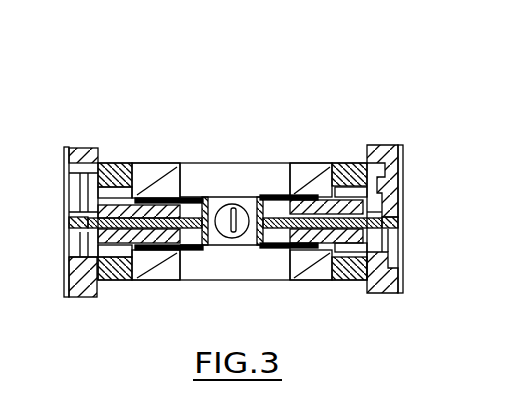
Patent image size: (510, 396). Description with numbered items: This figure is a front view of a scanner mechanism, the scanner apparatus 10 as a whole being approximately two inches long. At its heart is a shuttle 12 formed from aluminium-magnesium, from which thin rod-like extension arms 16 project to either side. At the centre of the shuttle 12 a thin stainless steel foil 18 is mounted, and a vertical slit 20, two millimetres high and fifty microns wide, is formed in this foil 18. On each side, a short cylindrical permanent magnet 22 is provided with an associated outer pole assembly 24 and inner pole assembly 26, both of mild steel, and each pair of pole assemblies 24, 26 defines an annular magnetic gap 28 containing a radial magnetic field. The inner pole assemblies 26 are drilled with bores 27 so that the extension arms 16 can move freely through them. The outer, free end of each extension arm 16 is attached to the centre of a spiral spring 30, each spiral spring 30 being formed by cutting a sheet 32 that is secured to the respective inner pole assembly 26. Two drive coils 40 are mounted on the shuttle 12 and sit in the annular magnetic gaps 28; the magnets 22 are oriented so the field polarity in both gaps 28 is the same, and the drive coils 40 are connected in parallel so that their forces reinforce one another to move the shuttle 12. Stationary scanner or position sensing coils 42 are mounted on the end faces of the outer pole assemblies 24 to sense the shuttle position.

The scanner apparatus 10 is at (402, 106).
The shuttle 12 is at (251, 245).
The extension arms 16 is at (88, 218).
The stainless steel foil 18 is at (222, 230).
The vertical slit 20 is at (237, 228).
The permanent magnets 22 is at (347, 178).
The outer pole assembly 24 is at (153, 178).
The inner pole assembly 26 is at (82, 297).
The bores 27 is at (306, 215).
The annular magnetic gap 28 is at (328, 254).
The spiral spring 30 is at (66, 229).
The sheet 32 is at (403, 162).
The drive coils 40 is at (197, 196).
The position sensing coils 42 is at (290, 194).